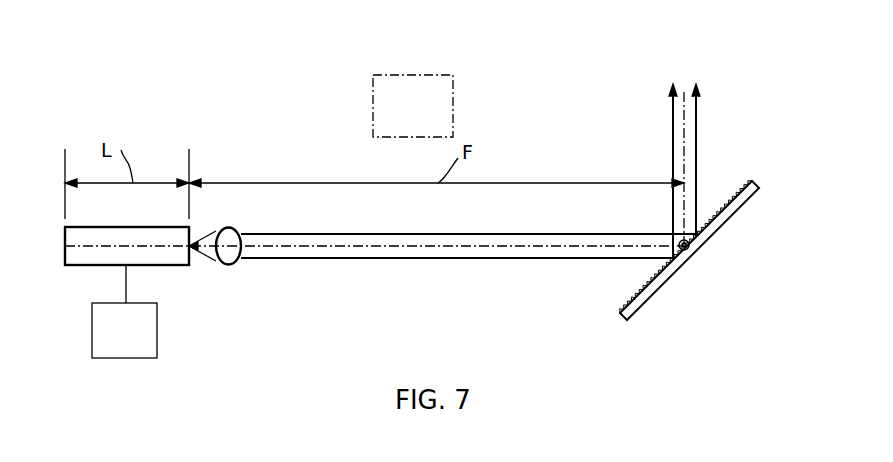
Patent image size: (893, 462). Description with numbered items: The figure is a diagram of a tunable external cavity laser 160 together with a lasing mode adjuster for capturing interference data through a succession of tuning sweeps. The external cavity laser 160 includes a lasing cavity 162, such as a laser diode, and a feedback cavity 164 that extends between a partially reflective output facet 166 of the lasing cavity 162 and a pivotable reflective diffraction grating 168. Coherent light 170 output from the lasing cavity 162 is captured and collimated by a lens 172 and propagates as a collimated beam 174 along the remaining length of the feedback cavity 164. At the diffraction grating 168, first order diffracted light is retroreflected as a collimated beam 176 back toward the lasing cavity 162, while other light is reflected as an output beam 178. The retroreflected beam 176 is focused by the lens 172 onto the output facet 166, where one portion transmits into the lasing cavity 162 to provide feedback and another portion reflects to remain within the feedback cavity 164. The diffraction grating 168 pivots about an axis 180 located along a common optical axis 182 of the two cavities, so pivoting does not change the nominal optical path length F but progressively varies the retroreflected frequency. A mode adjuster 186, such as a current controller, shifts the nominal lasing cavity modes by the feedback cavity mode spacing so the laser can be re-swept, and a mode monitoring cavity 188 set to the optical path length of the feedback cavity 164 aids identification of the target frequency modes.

The external cavity laser 160 is at (279, 113).
The lasing cavity 162 is at (91, 258).
The feedback cavity 164 is at (470, 277).
The partially reflective output facet 166 is at (196, 229).
The reflective diffraction grating 168 is at (732, 193).
The coherent light 170 is at (205, 253).
The lens 172 is at (233, 228).
The collimated beam 174 is at (556, 268).
The retroreflected collimated beam 176 is at (389, 226).
The output beam 178 is at (664, 119).
The pivot axis 180 is at (690, 252).
The common optical axis 182 is at (615, 243).
The mode adjuster 186 is at (124, 311).
The mode monitoring cavity 188 is at (413, 106).